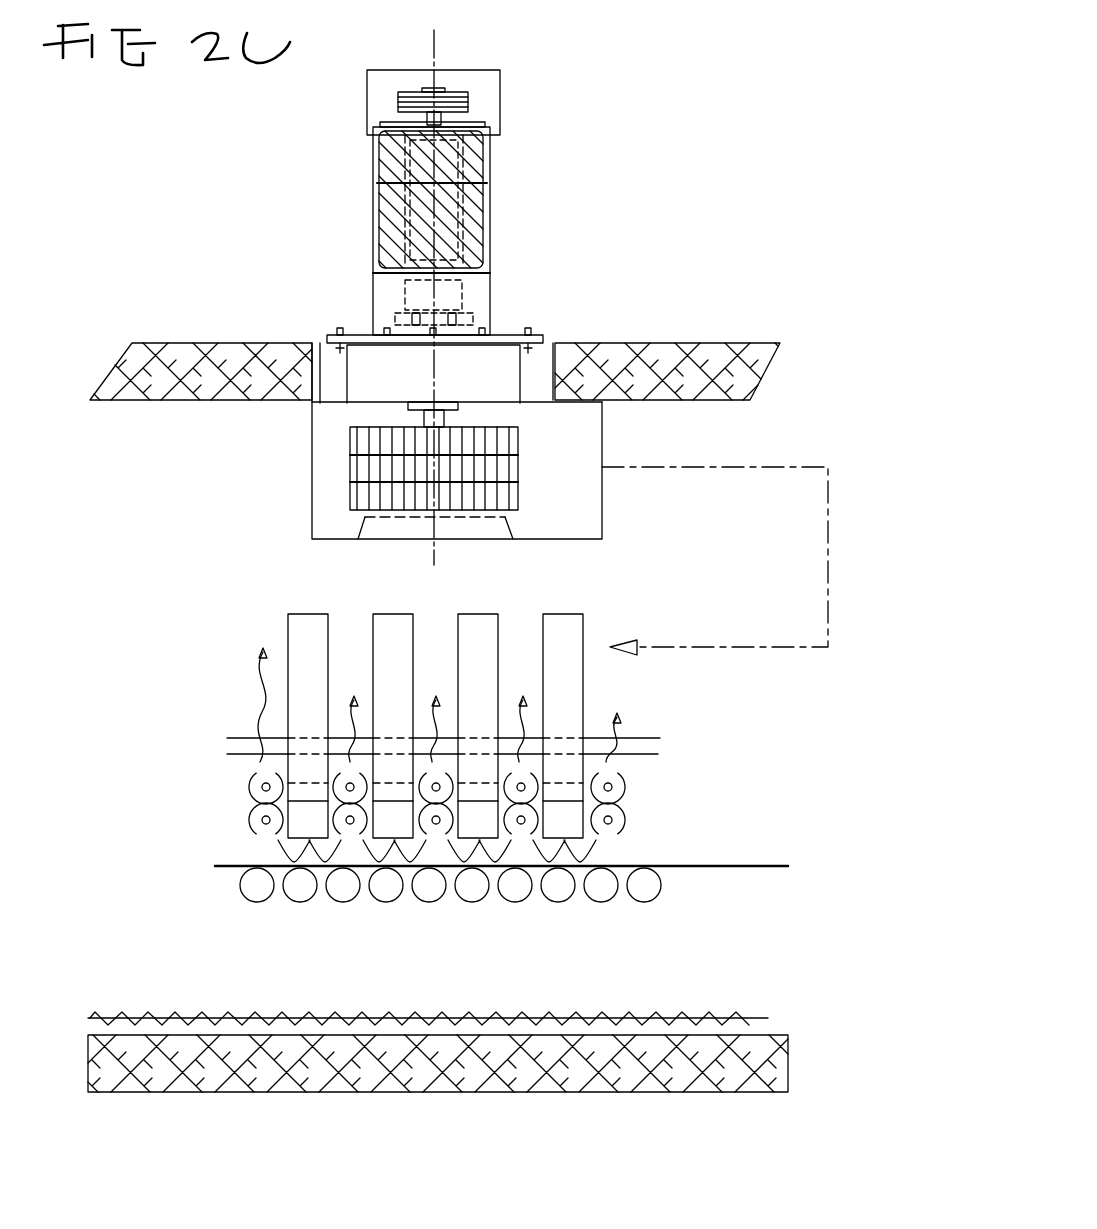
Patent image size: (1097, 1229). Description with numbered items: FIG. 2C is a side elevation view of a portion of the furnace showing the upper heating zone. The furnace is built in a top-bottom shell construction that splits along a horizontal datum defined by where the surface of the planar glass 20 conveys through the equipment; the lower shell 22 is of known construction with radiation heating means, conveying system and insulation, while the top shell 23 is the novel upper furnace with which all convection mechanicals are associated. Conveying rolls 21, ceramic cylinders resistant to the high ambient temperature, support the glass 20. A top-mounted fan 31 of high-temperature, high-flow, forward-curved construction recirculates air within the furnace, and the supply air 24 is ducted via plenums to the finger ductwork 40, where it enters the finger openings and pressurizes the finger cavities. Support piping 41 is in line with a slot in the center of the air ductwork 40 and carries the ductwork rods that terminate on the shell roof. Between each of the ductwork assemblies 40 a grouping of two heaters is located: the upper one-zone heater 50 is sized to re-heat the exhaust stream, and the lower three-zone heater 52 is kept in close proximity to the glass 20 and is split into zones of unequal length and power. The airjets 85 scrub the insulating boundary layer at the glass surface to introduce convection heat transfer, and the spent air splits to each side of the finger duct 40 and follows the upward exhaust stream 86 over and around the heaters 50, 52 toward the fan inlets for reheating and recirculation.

The planar glass 20 is at (747, 866).
The conveying rolls 21 is at (262, 882).
The lower shell 22 is at (814, 1039).
The top shell 23 is at (653, 331).
The supply air duct to plenums 24 is at (715, 561).
The fan 31 is at (400, 463).
The finger ductwork 40 is at (560, 677).
The support piping 41 is at (656, 738).
The 1-zone heater 50 is at (612, 785).
The 3-zone heater 52 is at (612, 818).
The airjets 85 is at (281, 858).
The exhaust stream 86 is at (345, 578).